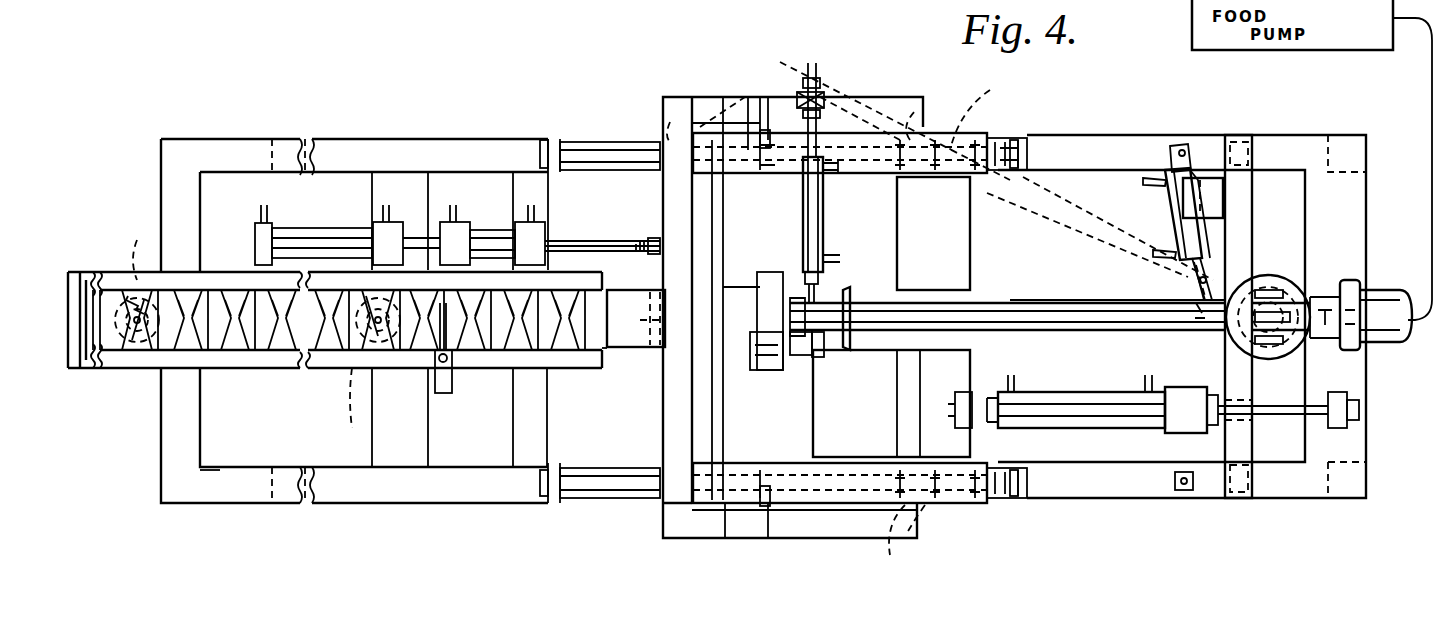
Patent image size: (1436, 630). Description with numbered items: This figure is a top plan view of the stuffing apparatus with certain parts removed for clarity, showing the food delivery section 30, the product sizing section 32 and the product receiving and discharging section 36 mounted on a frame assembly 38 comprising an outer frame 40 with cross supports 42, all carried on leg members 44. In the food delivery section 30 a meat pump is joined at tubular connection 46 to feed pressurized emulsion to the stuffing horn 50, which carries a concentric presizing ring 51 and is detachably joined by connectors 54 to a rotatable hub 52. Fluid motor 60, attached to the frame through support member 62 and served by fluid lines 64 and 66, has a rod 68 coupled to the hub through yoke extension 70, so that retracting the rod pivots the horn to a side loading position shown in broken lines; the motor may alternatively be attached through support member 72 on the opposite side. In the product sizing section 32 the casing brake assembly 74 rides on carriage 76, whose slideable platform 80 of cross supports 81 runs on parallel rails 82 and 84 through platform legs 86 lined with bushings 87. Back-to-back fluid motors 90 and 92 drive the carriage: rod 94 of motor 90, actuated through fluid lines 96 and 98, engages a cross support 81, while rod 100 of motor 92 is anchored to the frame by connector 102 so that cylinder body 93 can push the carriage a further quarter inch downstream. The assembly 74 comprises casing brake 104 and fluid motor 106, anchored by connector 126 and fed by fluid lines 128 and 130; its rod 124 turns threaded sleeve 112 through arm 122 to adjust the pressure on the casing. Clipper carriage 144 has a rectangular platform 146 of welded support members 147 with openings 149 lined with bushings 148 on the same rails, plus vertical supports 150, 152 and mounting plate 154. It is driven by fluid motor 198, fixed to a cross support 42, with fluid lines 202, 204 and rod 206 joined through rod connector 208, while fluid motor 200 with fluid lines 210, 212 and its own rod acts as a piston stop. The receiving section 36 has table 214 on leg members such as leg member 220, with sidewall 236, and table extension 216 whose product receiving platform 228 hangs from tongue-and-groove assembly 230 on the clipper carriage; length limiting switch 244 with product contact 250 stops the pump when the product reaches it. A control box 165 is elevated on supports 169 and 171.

The food delivery section 30 is at (1046, 302).
The product sizing section 32 is at (854, 380).
The product receiving and discharging section 36 is at (265, 406).
The frame assembly 38 is at (450, 526).
The outer frame 40 is at (330, 134).
The cross supports 42 is at (508, 435).
The leg members 44 is at (270, 142).
The tubular connection 46 is at (1370, 305).
The stuffing horn 50 is at (1007, 298).
The presizing ring 51 is at (838, 362).
The rotatable hub 52 is at (1281, 270).
The connectors 54 is at (1294, 296).
The fluid motor 60 is at (1176, 222).
The support member 62 is at (1178, 144).
The fluid line 64 is at (1139, 184).
The fluid line 66 is at (1156, 252).
The rod 68 is at (1184, 284).
The yoke extension 70 is at (1208, 334).
The support member 72 is at (1184, 496).
The casing brake assembly 74 is at (780, 288).
The carriage 76 is at (1015, 338).
The slideable platform 80 is at (970, 114).
The cross supports 81 is at (972, 220).
The rail 82 is at (574, 144).
The rail 84 is at (574, 508).
The platform legs 86 is at (995, 140).
The bushings 87 is at (1016, 142).
The fluid motor 90 is at (1046, 422).
The fluid motor 92 is at (1178, 430).
The cylinder body 93 is at (1218, 396).
The rod 94 is at (943, 392).
The fluid line 96 is at (1016, 382).
The fluid line 98 is at (1146, 378).
The rod 100 is at (1282, 412).
The connector 102 is at (1339, 392).
The casing brake 104 is at (742, 358).
The fluid motor 106 is at (823, 216).
The sleeve 112 is at (751, 280).
The arm 122 is at (799, 394).
The rod 124 is at (828, 278).
The connector 126 is at (816, 90).
The fluid line 128 is at (838, 170).
The fluid line 130 is at (832, 260).
The clipper carriage 144 is at (694, 68).
The platform 146 is at (674, 532).
The support members 147 is at (898, 444).
The bushings 148 is at (642, 150).
The openings 149 is at (664, 122).
The vertical support 150 is at (742, 540).
The vertical support 152 is at (751, 108).
The mounting plate 154 is at (667, 391).
The control box 165 is at (1199, 178).
The vertical support 169 is at (1232, 506).
The horizontal support 171 is at (1238, 134).
The fluid motor 198 is at (490, 232).
The fluid motor 200 is at (335, 230).
The fluid line 202 is at (456, 202).
The fluid line 204 is at (534, 206).
The rod 206 is at (624, 238).
The rod connector 208 is at (656, 254).
The fluid line 210 is at (260, 205).
The fluid line 212 is at (392, 202).
The table 214 is at (416, 168).
The table extension 216 is at (658, 382).
The leg member 220 is at (136, 240).
The product receiving platform 228 is at (610, 348).
The tongue-and-groove support assembly 230 is at (656, 322).
The sidewall 236 is at (120, 284).
The length limiting switch 244 is at (452, 356).
The product contact 250 is at (380, 312).